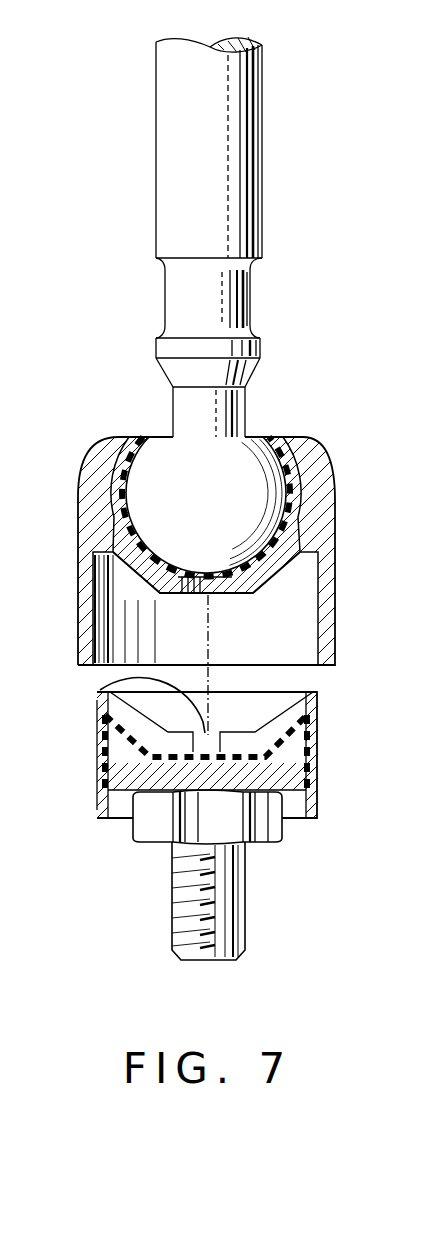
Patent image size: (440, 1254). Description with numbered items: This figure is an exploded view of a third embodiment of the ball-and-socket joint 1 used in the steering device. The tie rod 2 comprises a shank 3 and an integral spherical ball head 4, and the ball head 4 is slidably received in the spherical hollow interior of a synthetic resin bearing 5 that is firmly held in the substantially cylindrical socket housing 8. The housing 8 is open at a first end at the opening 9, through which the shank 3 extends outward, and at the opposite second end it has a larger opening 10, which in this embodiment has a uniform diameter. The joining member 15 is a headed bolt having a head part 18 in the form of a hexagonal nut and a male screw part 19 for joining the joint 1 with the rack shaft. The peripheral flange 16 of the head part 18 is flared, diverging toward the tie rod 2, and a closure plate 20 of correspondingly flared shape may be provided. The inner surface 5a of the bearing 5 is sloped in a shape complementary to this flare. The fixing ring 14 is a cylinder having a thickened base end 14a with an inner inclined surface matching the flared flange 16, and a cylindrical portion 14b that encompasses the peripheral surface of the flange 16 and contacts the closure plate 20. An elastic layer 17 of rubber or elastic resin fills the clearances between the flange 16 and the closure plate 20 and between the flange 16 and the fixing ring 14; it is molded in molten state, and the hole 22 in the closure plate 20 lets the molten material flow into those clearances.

The ball-and-socket joint 1 is at (352, 427).
The tie rod 2 is at (268, 155).
The shank 3 is at (252, 296).
The ball head 4 is at (247, 450).
The bearing 5 is at (300, 489).
The inner surface of the bearing 5a is at (262, 582).
The socket housing 8 is at (327, 530).
The opening 9 is at (128, 437).
The opening 10 is at (113, 648).
The fixing ring 14 is at (318, 793).
The thickened base end 14a is at (118, 815).
The cylindrical portion 14b is at (103, 752).
The joining member 15 is at (252, 877).
The peripheral flange 16 is at (302, 770).
The elastic layer 17 is at (300, 735).
The head part 18 is at (288, 832).
The male screw part 19 is at (175, 896).
The closure plate 20 is at (308, 698).
The hole 22 is at (108, 690).